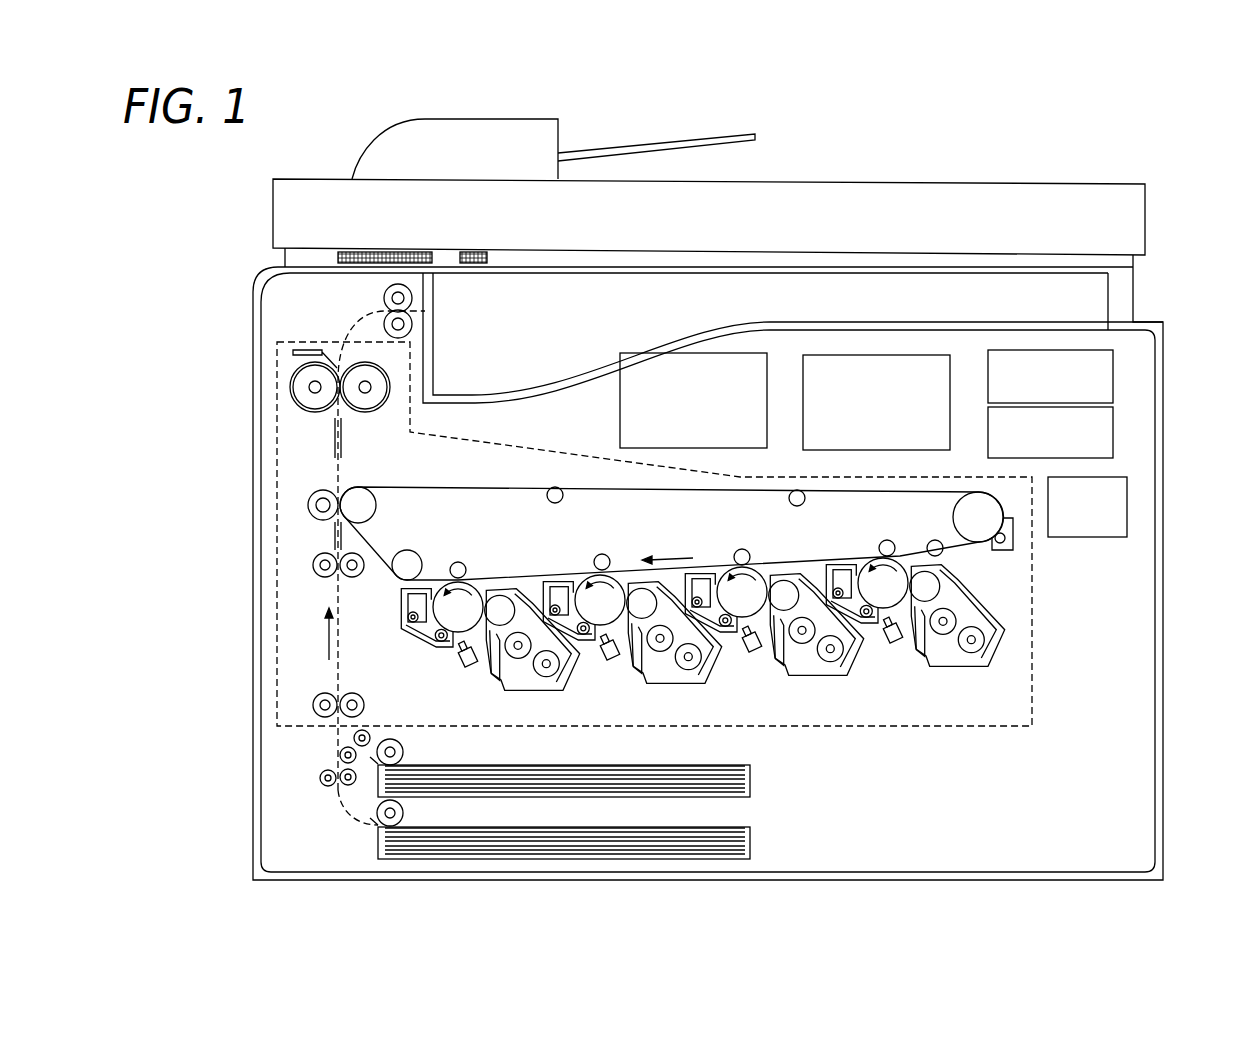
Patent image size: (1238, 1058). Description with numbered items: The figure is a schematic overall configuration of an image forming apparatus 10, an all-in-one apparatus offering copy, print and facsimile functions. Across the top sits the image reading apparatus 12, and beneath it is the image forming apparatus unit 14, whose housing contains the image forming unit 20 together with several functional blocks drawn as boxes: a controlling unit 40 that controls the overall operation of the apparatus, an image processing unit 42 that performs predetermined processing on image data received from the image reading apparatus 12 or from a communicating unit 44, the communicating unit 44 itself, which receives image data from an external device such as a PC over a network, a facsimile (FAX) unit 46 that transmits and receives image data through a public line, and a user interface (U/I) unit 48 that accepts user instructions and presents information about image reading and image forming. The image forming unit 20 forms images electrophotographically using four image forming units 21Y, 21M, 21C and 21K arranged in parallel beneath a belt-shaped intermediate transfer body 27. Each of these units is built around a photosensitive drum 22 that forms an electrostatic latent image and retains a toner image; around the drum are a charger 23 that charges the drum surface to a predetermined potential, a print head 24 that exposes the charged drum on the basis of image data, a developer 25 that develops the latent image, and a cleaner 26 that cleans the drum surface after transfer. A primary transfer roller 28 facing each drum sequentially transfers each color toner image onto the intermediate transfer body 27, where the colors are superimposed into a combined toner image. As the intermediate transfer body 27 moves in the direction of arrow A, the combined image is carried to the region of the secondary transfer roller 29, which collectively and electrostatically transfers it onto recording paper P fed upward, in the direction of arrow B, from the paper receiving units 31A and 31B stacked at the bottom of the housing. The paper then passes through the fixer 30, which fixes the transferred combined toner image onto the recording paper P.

The image forming apparatus 10 is at (830, 156).
The image reading apparatus 12 is at (930, 180).
The image forming apparatus unit 14 is at (1149, 321).
The image forming unit 20 is at (570, 452).
The image forming unit 21K is at (482, 627).
The image forming unit 21C is at (716, 675).
The image forming unit 21M is at (859, 666).
The image forming unit 21Y is at (999, 659).
The photosensitive drum 22 is at (454, 584).
The charger 23 is at (442, 658).
The print head 24 is at (470, 678).
The developer 25 is at (546, 653).
The cleaner 26 is at (405, 618).
The intermediate transfer body 27 is at (503, 485).
The primary transfer roller 28 is at (460, 562).
The secondary transfer roller 29 is at (318, 492).
The fixer 30 is at (372, 410).
The paper receiving unit 31A is at (753, 775).
The paper receiving unit 31B is at (753, 835).
The controlling unit 40 is at (767, 398).
The image processing unit 42 is at (950, 400).
The communicating unit 44 is at (1113, 377).
The facsimile (FAX) unit 46 is at (1113, 433).
The user interface (U/I) unit 48 is at (1103, 537).
The recording paper P is at (707, 763).